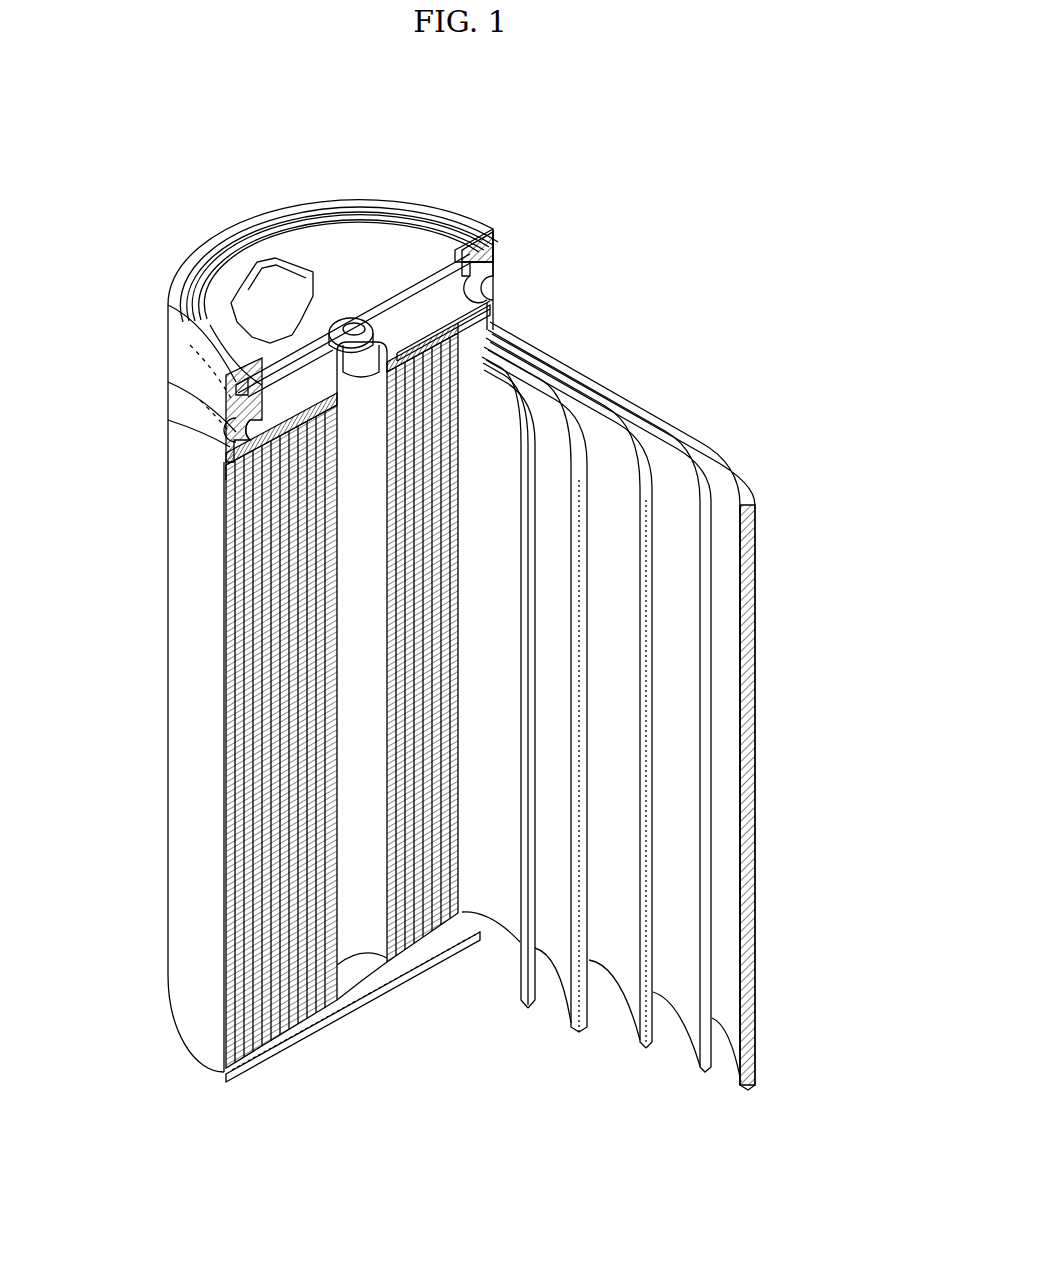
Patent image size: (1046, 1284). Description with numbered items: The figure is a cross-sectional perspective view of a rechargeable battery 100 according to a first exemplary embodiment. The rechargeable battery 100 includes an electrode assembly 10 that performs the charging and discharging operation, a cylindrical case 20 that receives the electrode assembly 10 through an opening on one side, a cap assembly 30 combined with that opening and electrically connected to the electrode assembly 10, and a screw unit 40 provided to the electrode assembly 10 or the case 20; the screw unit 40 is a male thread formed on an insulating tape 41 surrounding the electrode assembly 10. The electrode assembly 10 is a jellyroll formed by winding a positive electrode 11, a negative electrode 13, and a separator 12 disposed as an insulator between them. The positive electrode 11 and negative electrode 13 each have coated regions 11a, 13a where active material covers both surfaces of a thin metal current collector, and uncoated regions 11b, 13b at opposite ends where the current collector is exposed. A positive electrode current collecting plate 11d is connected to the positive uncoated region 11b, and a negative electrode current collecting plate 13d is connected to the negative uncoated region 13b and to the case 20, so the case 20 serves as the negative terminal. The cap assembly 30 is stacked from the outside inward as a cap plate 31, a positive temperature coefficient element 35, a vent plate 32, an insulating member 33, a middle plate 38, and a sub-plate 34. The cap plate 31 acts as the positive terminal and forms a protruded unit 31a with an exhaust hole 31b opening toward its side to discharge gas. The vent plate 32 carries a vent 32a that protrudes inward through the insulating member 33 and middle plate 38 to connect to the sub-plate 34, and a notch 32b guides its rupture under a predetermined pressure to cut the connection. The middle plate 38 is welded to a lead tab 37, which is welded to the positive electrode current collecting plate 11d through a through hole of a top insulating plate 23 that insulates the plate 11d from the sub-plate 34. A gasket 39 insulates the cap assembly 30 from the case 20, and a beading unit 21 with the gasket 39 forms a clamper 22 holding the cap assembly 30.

The rechargeable battery 100 is at (661, 121).
The electrode assembly 10 is at (247, 830).
The positive electrode 11 is at (588, 687).
The coated region 11a is at (652, 510).
The uncoated region 11b is at (621, 430).
The positive electrode current collecting plate 11d is at (228, 470).
The separator 12 is at (580, 1015).
The negative electrode 13 is at (506, 732).
The coated region 13a is at (521, 965).
The uncoated region 13b is at (470, 1072).
The negative electrode current collecting plate 13d is at (293, 1020).
The case 20 is at (182, 633).
The beading unit 21 is at (238, 428).
The clamper 22 is at (236, 378).
The top insulating plate 23 is at (242, 452).
The cap assembly 30 is at (349, 269).
The cap plate 31 is at (308, 269).
The protruded unit 31a is at (290, 245).
The exhaust hole 31b is at (244, 276).
The vent plate 32 is at (442, 266).
The vent 32a is at (346, 318).
The notch 32b is at (356, 325).
The insulating member 33 is at (414, 298).
The sub-plate 34 is at (489, 305).
The positive temperature coefficient element 35 is at (493, 240).
The lead tab 37 is at (456, 386).
The middle plate 38 is at (481, 290).
The gasket 39 is at (480, 262).
The screw unit 40 is at (656, 706).
The insulating tape 41 is at (724, 752).